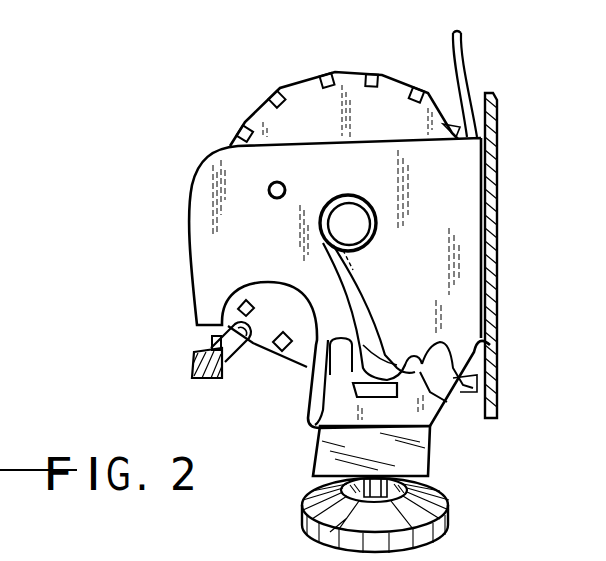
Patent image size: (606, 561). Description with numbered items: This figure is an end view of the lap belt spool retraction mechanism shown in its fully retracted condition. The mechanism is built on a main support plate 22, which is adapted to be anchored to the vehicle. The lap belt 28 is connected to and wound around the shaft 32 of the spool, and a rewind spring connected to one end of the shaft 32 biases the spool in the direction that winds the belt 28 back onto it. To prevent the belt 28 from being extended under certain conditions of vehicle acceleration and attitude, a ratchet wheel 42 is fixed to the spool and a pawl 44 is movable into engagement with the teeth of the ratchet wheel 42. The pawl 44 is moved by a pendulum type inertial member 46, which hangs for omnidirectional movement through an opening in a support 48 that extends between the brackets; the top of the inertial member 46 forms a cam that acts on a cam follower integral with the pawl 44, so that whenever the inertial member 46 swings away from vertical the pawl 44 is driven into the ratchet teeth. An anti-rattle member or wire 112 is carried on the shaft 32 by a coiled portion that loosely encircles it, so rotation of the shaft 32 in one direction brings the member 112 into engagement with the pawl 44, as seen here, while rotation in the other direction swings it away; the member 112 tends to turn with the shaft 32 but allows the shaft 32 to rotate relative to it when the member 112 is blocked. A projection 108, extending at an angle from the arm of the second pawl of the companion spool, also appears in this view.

The main support plate 22 is at (498, 165).
The belt 28 is at (466, 76).
The shaft 32 is at (207, 182).
The ratchet wheel 42 is at (271, 120).
The pawl 44 is at (353, 388).
The pendulum type inertial member 46 is at (449, 497).
The support 48 is at (431, 442).
The projection 108 is at (240, 357).
The anti-rattle member or wire 112 is at (333, 274).